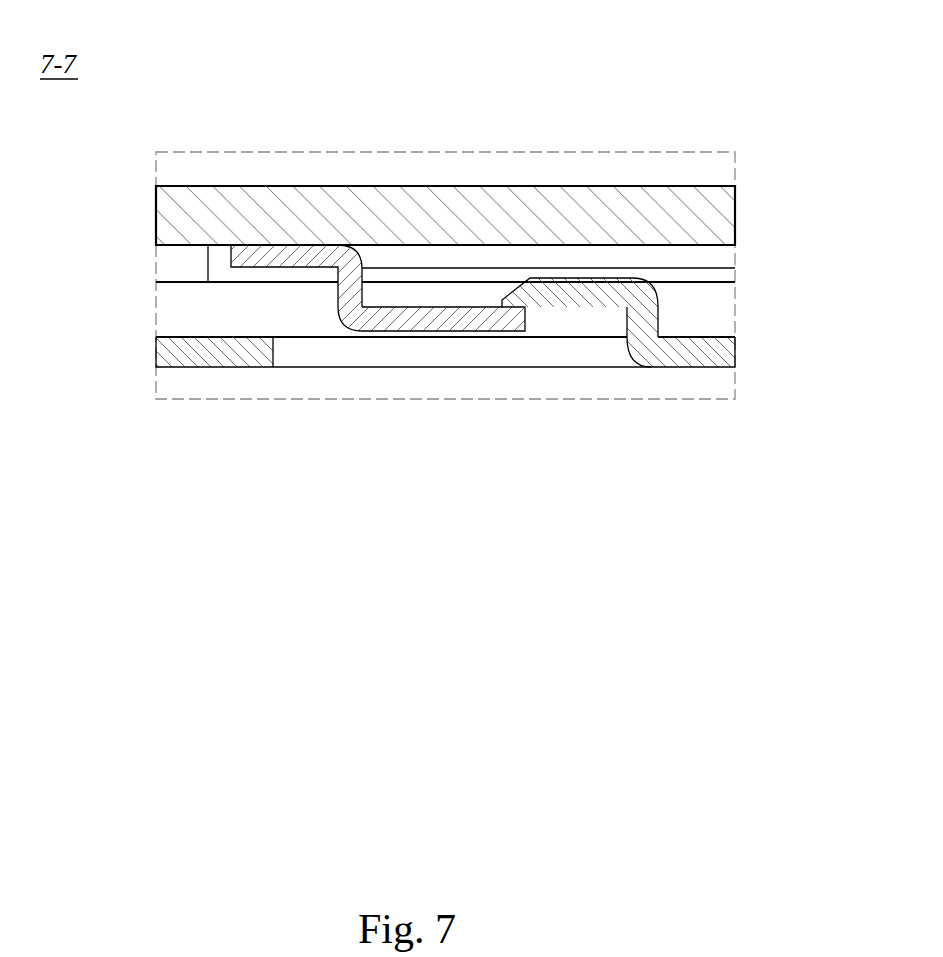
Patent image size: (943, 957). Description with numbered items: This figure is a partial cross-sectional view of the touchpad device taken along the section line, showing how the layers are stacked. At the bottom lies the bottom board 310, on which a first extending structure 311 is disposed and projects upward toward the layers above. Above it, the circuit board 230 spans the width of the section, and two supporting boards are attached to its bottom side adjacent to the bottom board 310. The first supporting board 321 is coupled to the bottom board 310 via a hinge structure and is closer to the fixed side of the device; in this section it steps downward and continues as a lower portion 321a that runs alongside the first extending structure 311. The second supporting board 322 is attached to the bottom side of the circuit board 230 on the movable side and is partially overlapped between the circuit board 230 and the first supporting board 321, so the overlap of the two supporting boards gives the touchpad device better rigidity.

The circuit board 230 is at (722, 213).
The bottom board 310 is at (722, 355).
The first extending structure 311 is at (558, 297).
The first supporting board 321 is at (292, 257).
The lower portion of conductive layer 321a is at (470, 322).
The second supporting board 322 is at (168, 268).